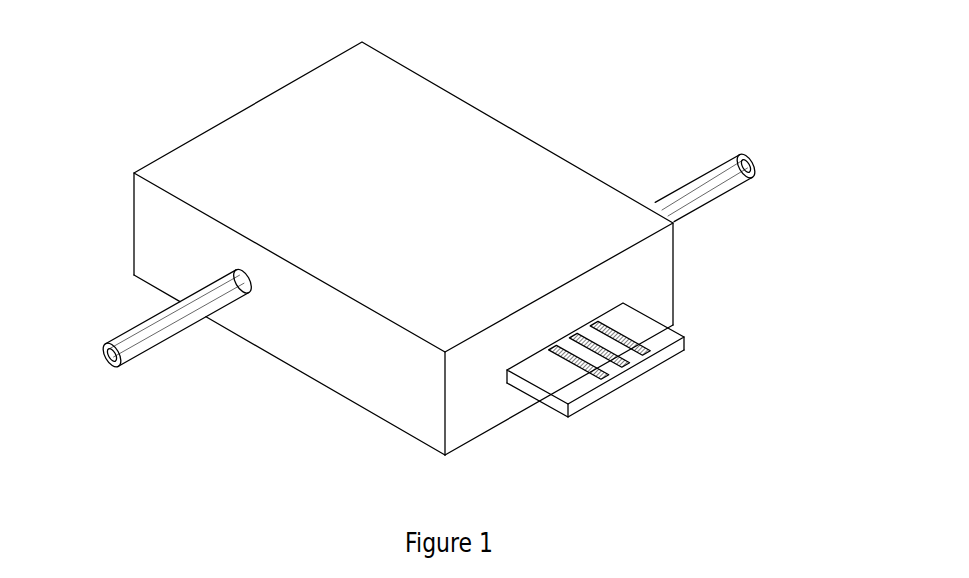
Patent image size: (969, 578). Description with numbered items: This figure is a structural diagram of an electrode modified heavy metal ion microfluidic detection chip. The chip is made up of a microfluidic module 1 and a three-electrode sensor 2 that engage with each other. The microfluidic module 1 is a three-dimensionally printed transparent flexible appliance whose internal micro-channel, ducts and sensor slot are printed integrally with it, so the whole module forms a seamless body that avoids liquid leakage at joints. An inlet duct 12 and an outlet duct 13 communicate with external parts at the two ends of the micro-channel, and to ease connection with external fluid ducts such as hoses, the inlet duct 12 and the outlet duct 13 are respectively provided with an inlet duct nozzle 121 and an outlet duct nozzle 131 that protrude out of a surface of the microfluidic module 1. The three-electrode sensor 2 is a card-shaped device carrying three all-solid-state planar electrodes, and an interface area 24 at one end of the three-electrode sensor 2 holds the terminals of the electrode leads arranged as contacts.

The microfluidic module 1 is at (498, 110).
The inlet duct 12 is at (103, 360).
The inlet duct nozzle 121 is at (116, 367).
The outlet duct 13 is at (754, 158).
The outlet duct nozzle 131 is at (748, 153).
The three-electrode sensor 2 is at (640, 400).
The interface area 24 is at (558, 377).